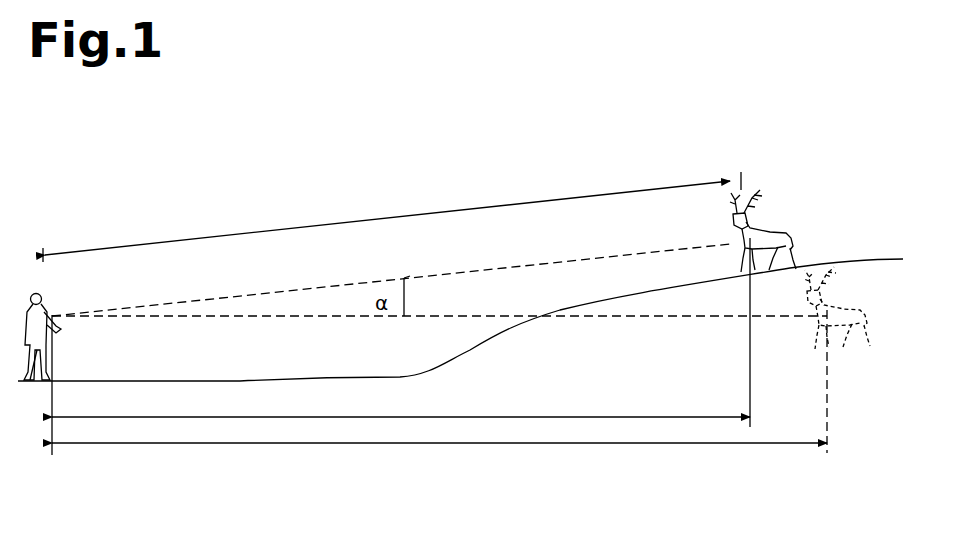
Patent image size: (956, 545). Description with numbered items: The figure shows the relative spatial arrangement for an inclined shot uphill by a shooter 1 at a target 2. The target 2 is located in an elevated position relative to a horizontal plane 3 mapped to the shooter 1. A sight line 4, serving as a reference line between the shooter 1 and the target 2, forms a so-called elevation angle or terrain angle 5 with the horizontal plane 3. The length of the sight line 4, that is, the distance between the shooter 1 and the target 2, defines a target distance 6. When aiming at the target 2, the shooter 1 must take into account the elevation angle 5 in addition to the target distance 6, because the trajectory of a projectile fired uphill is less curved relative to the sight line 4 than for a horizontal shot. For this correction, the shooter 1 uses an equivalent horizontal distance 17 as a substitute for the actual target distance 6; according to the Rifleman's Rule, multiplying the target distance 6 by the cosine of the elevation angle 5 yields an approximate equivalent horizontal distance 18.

The shooter 1 is at (33, 288).
The target 2 is at (788, 214).
The horizontal plane 3 is at (674, 315).
The sight line 4 is at (541, 261).
The elevation angle 5 is at (407, 290).
The target distance 6 is at (327, 226).
The equivalent horizontal distance 17 is at (354, 445).
The approximate equivalent horizontal distance 18 is at (482, 413).